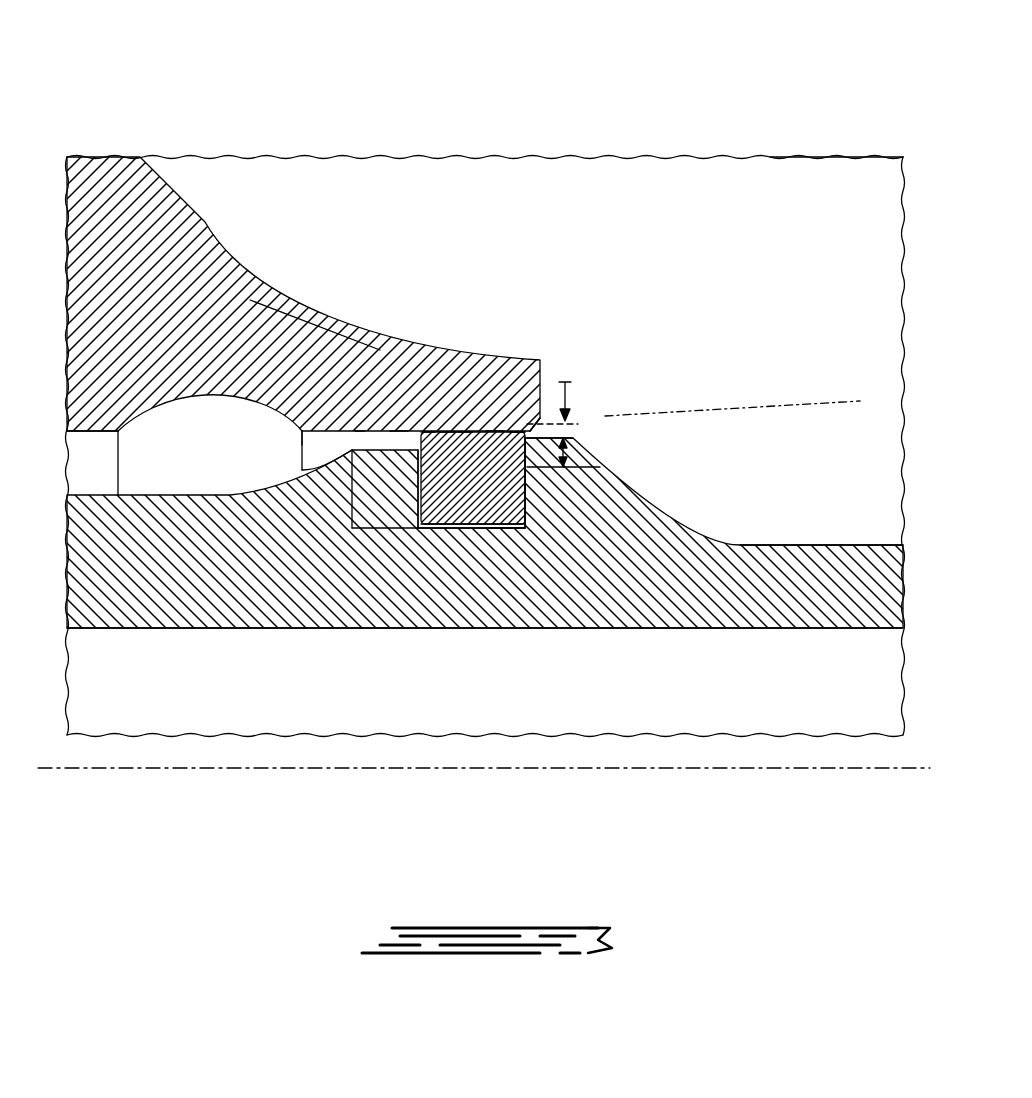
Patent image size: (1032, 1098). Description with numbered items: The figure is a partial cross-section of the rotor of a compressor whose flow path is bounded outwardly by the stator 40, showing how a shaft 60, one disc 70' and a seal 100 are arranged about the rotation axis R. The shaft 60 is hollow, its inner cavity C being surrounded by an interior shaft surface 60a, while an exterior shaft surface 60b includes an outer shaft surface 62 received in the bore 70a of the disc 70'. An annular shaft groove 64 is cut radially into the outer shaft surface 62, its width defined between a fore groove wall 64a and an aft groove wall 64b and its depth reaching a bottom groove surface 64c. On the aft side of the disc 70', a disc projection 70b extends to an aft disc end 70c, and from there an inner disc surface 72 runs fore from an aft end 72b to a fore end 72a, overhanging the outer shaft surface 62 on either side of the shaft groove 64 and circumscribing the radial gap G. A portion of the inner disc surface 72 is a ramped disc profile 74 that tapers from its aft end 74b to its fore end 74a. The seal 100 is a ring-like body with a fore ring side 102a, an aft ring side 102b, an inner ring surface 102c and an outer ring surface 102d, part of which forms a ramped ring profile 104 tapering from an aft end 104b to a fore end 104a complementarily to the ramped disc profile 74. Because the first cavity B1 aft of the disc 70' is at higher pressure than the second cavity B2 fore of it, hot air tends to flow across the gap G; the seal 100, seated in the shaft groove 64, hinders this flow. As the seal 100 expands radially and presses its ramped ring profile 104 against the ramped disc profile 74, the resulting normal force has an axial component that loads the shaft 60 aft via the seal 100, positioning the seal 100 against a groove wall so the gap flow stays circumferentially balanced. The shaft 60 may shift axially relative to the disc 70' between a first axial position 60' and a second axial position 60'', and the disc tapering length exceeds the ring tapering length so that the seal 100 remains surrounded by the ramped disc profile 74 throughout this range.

The stator 40 is at (778, 135).
The disc 70' is at (303, 260).
The bore 70a is at (66, 441).
The disc projection 70b is at (375, 303).
The aft disc end 70c is at (538, 420).
The inner disc surface 72 is at (330, 452).
The fore end 72a is at (300, 433).
The aft end 72b is at (538, 420).
The ramped disc profile 74 is at (495, 431).
The fore end 74a is at (399, 431).
The aft end 74b is at (518, 416).
The shaft 60 is at (485, 567).
The first axial position 60' is at (385, 620).
The second axial position 60'' is at (514, 620).
The interior shaft surface 60a is at (725, 628).
The exterior shaft surface 60b is at (797, 545).
The outer shaft surface 62 is at (567, 437).
The shaft groove 64 is at (528, 505).
The fore groove wall 64a is at (418, 525).
The aft groove wall 64b is at (527, 525).
The bottom groove surface 64c is at (456, 528).
The seal 100 is at (509, 484).
The fore ring side 102a is at (362, 525).
The aft ring side 102b is at (567, 455).
The inner ring surface 102c is at (472, 528).
The outer ring surface 102d is at (358, 431).
The ramped ring profile 104 is at (447, 431).
The fore end 104a is at (427, 420).
The aft end 104b is at (517, 420).
The radial gap G is at (566, 385).
The first cavity B1 is at (822, 235).
The second cavity B2 is at (53, 476).
The inner cavity C is at (645, 688).
The rotation axis R is at (483, 768).